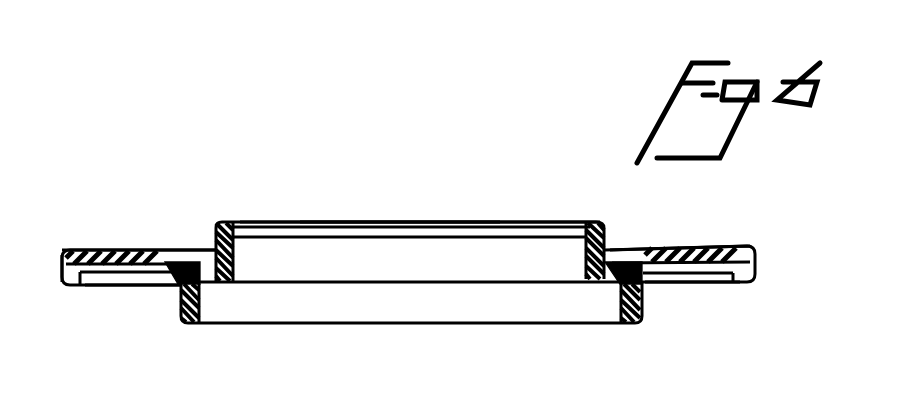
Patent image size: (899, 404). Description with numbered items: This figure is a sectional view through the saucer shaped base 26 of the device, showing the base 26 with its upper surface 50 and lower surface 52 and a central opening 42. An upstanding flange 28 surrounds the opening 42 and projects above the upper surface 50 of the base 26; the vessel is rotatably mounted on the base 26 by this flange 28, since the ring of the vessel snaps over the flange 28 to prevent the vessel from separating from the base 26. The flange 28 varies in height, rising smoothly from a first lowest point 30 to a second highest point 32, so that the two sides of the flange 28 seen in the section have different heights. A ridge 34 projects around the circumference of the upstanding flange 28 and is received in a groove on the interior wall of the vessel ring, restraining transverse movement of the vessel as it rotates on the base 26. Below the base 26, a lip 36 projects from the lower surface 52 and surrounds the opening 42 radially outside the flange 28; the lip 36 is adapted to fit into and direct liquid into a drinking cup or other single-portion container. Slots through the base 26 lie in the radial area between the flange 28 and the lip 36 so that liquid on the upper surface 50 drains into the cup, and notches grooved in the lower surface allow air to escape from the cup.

The base 26 is at (757, 264).
The upstanding flange 28 is at (215, 236).
The first lowest point 30 is at (552, 222).
The second highest point 32 is at (222, 237).
The ridge 34 is at (606, 242).
The lip 36 is at (597, 305).
The central opening 42 is at (386, 212).
The upper surface 50 is at (85, 284).
The lower surface 52 is at (80, 250).